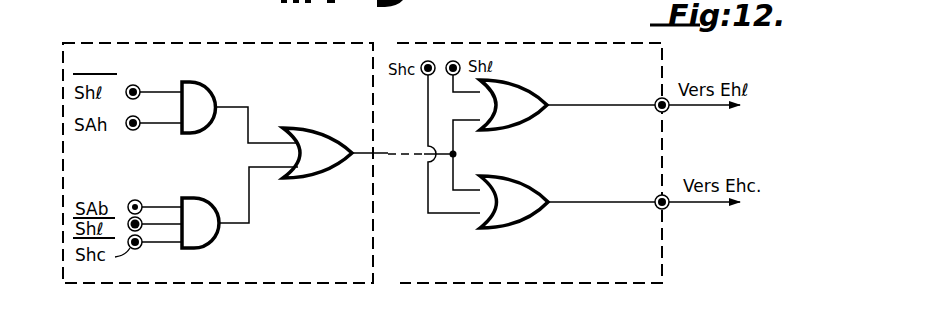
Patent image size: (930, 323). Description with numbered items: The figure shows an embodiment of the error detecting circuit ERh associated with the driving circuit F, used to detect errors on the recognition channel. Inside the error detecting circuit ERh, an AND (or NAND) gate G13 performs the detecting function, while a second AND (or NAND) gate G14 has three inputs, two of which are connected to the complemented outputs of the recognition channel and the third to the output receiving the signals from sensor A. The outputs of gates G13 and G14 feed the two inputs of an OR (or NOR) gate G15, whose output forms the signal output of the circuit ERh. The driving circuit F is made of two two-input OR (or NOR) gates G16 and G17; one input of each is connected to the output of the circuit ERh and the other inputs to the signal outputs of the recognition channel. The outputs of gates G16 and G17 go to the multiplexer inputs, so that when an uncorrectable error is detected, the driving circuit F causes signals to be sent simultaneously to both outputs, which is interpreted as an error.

The AND gate G13 is at (197, 100).
The AND gate G14 is at (200, 220).
The OR gate G15 is at (317, 152).
The OR gate G16 is at (527, 110).
The OR gate G17 is at (528, 203).
The error detecting circuit ERh is at (157, 42).
The driving circuit F is at (594, 43).